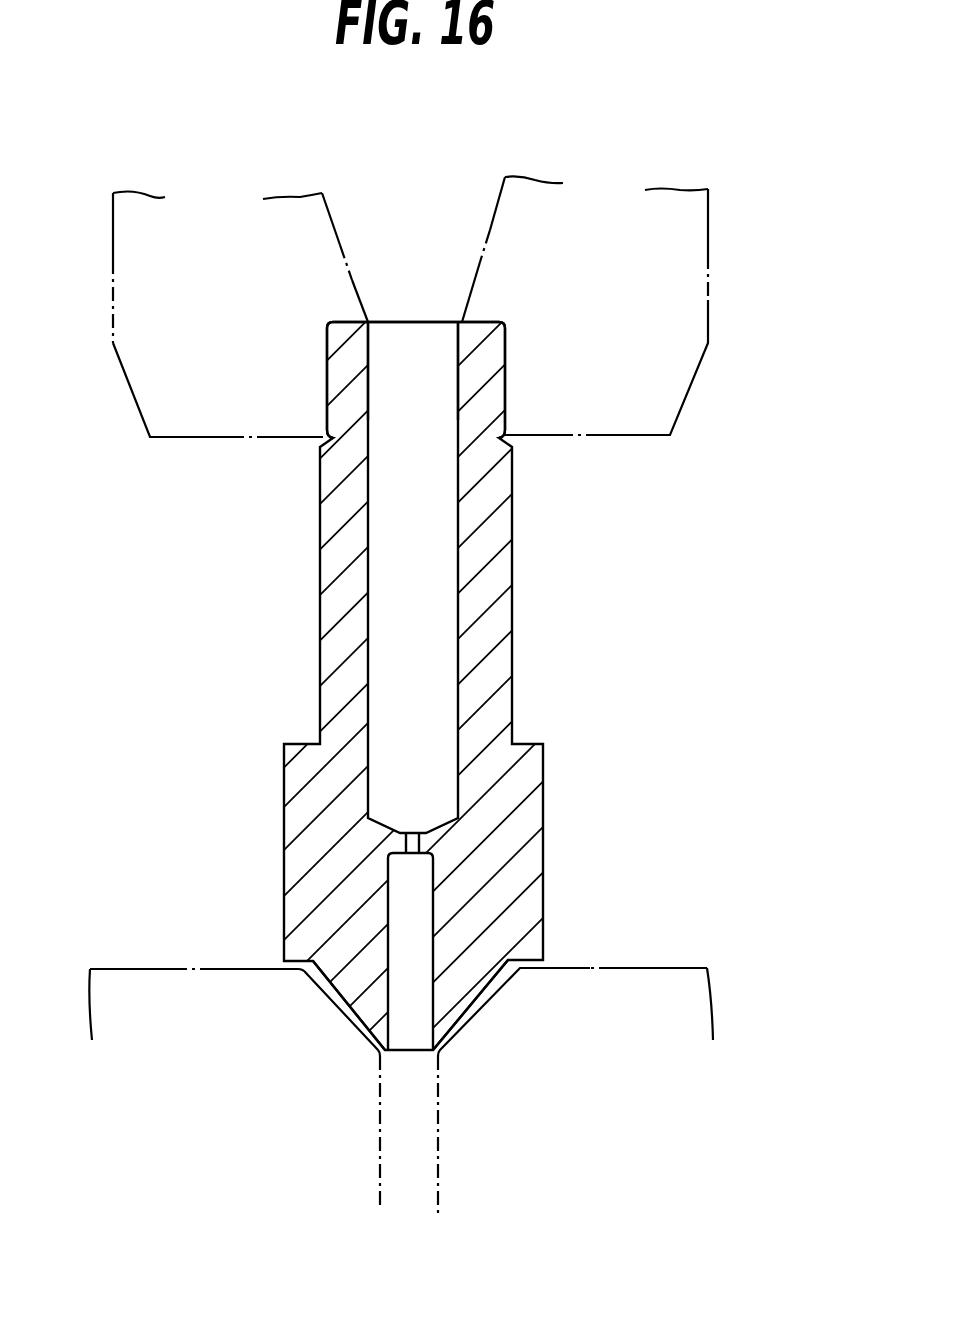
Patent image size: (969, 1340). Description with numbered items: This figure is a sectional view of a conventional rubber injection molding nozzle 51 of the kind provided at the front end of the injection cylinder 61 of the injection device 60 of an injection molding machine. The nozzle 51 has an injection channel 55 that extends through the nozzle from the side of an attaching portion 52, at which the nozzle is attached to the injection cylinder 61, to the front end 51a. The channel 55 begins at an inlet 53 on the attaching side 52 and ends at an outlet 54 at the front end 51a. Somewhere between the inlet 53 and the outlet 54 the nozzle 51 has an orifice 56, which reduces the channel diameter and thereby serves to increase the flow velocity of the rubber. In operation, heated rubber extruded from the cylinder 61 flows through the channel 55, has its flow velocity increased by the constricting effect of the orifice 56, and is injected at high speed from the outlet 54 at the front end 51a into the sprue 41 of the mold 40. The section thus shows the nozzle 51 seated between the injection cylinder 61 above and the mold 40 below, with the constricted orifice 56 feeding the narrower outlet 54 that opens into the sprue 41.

The mold 40 is at (671, 963).
The sprue 41 is at (442, 1152).
The rubber injection molding nozzle 51 is at (512, 622).
The front end 51a is at (370, 1031).
The attaching portion 52 is at (509, 361).
The inlet 53 is at (418, 338).
The outlet 54 is at (412, 1053).
The injection channel 55 is at (398, 578).
The orifice 56 is at (428, 835).
The injection device 60 is at (715, 252).
The injection cylinder 61 is at (633, 434).